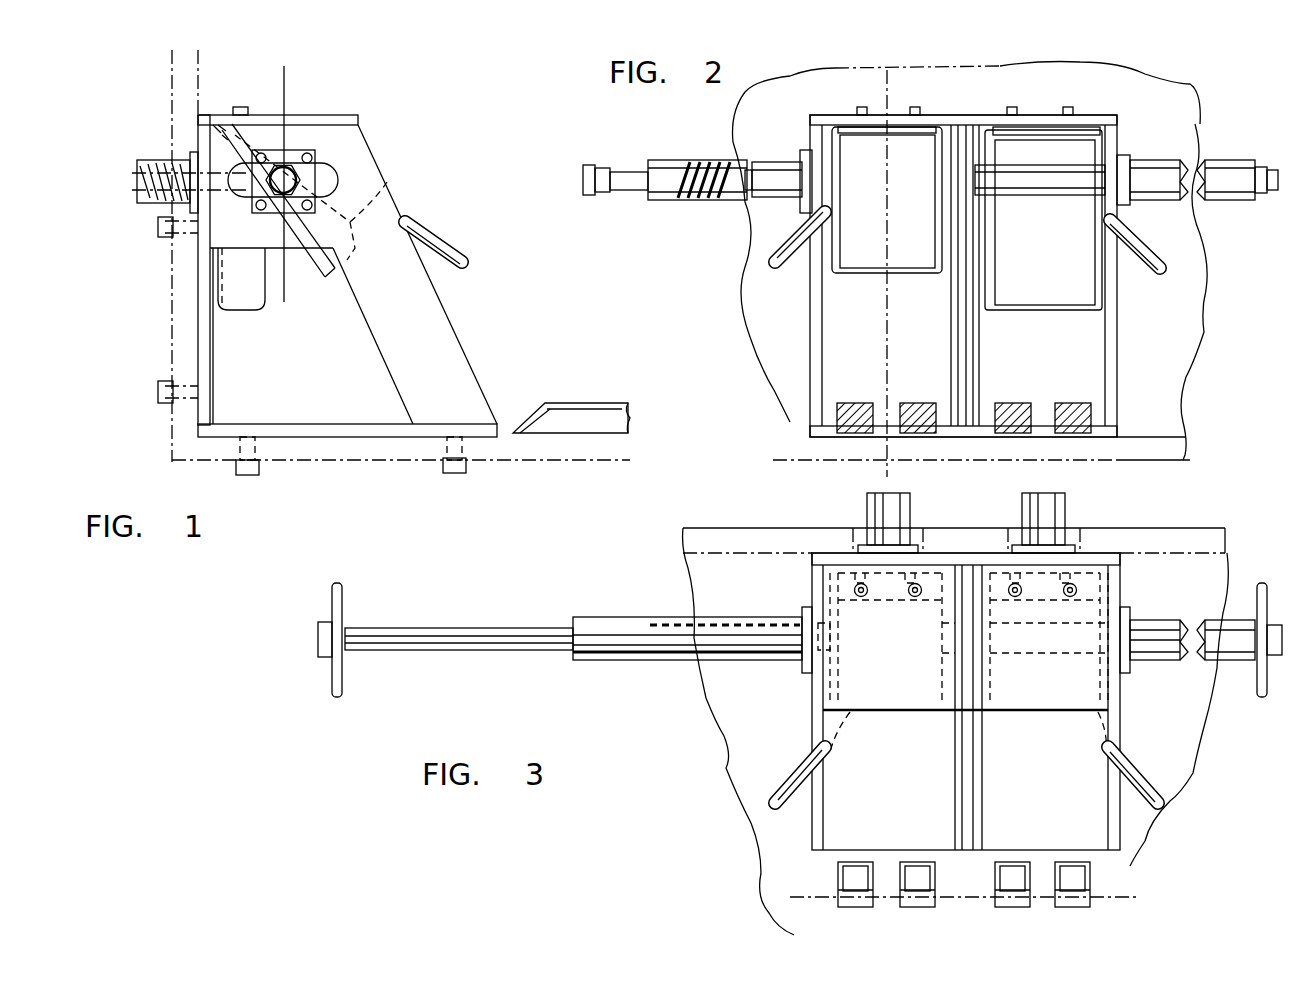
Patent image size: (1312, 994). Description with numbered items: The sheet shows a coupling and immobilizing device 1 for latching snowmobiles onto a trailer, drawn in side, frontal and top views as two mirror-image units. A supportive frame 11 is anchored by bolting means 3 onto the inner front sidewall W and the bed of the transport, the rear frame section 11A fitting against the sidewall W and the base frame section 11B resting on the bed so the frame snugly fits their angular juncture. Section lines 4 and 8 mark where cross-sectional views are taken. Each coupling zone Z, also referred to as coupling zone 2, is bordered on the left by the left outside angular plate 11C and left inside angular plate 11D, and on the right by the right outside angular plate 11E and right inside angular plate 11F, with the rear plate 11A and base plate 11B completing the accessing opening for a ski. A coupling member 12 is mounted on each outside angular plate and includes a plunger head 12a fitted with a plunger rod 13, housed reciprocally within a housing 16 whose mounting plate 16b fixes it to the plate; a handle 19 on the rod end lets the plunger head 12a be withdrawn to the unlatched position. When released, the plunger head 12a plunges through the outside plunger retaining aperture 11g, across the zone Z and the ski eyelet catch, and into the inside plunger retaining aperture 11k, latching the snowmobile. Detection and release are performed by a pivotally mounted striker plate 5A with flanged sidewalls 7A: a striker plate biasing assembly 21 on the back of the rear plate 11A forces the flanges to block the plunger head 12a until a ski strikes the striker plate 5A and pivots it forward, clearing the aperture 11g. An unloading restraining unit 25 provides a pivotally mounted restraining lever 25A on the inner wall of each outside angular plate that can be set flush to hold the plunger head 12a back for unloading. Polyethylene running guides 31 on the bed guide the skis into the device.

In FIG. 1, the front sidewall W is at (172, 80).
In FIG. 2, the front sidewall W is at (970, 261).
In FIG. 3, the front sidewall W is at (1160, 526).
In FIG. 1, the coupling and immobilizing device 1 is at (372, 118).
In FIG. 2, the coupling and immobilizing device 1 is at (805, 320).
In FIG. 1, the coupling zone 2 is at (382, 200).
In FIG. 3, the coupling zone 2 is at (882, 712).
In FIG. 1, the means for positionally anchoring 3 is at (158, 230).
In FIG. 2, the section line 4 is at (892, 78).
In FIG. 2, the striker plate 5A is at (860, 265).
In FIG. 1, the flanged sidewalls 7A is at (250, 312).
In FIG. 1, the section line 8 is at (289, 78).
In FIG. 1, the supportive frame 11 is at (468, 343).
In FIG. 2, the supportive frame 11 is at (975, 272).
In FIG. 3, the supportive frame 11 is at (1004, 701).
In FIG. 1, the rear frame section 11A is at (198, 368).
In FIG. 2, the rear frame section 11A is at (1117, 358).
In FIG. 1, the base frame section 11B is at (312, 438).
In FIG. 1, the left outside angular plate 11C is at (410, 216).
In FIG. 2, the left outside angular plate 11C is at (810, 392).
In FIG. 2, the left inside angular plate 11D is at (950, 312).
In FIG. 2, the right outside angular plate 11E is at (1120, 298).
In FIG. 2, the right inside angular plate 11F is at (975, 378).
In FIG. 3, the outside plunger retaining aperture 11g is at (1120, 676).
In FIG. 3, the inside plunger retaining aperture 11k is at (998, 712).
In FIG. 2, the coupling member 12 is at (801, 160).
In FIG. 3, the coupling member 12 is at (638, 617).
In FIG. 2, the plunger head 12a is at (1070, 198).
In FIG. 3, the plunger head 12a is at (726, 640).
In FIG. 2, the plunger rod 13 is at (630, 168).
In FIG. 3, the plunger rod 13 is at (476, 628).
In FIG. 2, the housing 16 is at (675, 158).
In FIG. 3, the housing 16 is at (640, 660).
In FIG. 1, the flange plate 16b is at (270, 150).
In FIG. 3, the flange plate 16b is at (805, 612).
In FIG. 1, the handle 19 is at (242, 196).
In FIG. 2, the handle 19 is at (594, 163).
In FIG. 3, the handle 19 is at (332, 601).
In FIG. 1, the striker plate biasing assembly 21 is at (133, 178).
In FIG. 3, the striker plate biasing assembly 21 is at (866, 520).
In FIG. 1, the unloading restraining unit 25 is at (467, 244).
In FIG. 2, the unloading restraining unit 25 is at (963, 254).
In FIG. 3, the unloading restraining unit 25 is at (968, 789).
In FIG. 1, the restraining lever 25A is at (470, 264).
In FIG. 2, the restraining lever 25A is at (786, 246).
In FIG. 3, the restraining lever 25A is at (788, 782).
In FIG. 1, the running guides 31 is at (589, 400).
In FIG. 2, the running guides 31 is at (854, 403).
In FIG. 3, the running guides 31 is at (838, 887).
In FIG. 2, the coupling zone Z is at (900, 186).
In FIG. 3, the coupling zone Z is at (906, 643).